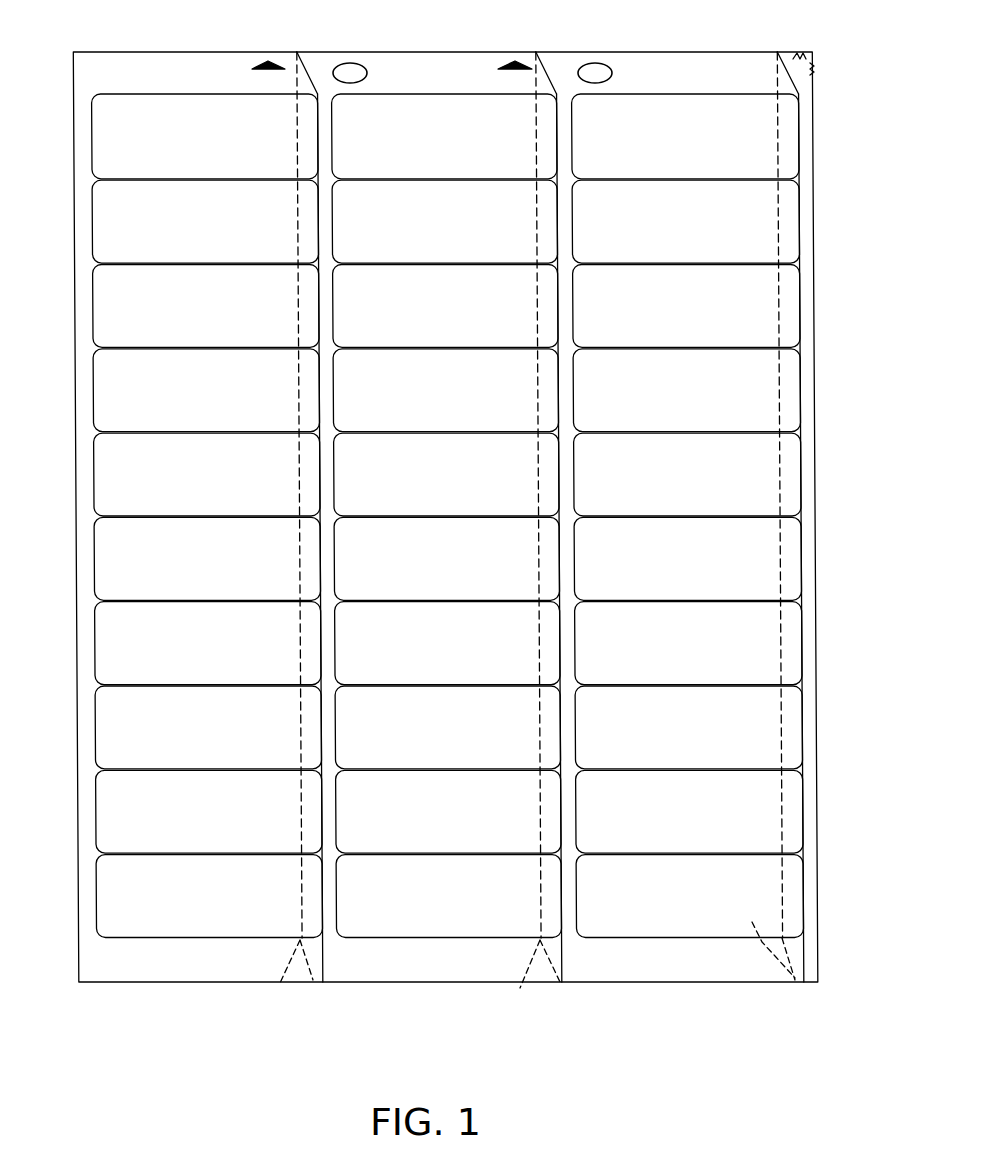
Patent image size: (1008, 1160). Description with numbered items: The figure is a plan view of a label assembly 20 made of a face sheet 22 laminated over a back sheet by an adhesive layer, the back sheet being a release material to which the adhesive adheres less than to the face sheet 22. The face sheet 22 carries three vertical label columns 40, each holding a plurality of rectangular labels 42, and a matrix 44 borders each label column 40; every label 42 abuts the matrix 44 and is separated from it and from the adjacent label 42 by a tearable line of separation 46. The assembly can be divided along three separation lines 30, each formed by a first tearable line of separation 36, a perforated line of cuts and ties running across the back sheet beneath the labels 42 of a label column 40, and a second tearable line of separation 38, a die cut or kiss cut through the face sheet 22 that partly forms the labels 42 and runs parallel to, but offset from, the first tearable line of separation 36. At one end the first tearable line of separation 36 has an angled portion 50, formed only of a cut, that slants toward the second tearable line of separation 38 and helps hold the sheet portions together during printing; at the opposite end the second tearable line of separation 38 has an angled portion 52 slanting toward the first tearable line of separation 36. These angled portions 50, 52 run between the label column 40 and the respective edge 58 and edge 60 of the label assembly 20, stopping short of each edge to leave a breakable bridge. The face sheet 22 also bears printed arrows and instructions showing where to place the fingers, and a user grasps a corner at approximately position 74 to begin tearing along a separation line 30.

The label assembly 20 is at (467, 541).
The face sheet 22 is at (220, 965).
The separation line 30 is at (317, 1002).
The first tearable line of separation 36 is at (297, 390).
The second tearable line of separation 38 is at (802, 240).
The label column 40 is at (166, 948).
The label 42 is at (310, 300).
The matrix 44 is at (220, 65).
The tearable line of separation 46 is at (573, 299).
The angled portion 50 is at (529, 959).
The angled portion 52 is at (313, 77).
The edge 58 is at (610, 983).
The edge 60 is at (473, 52).
The position 74 is at (752, 60).